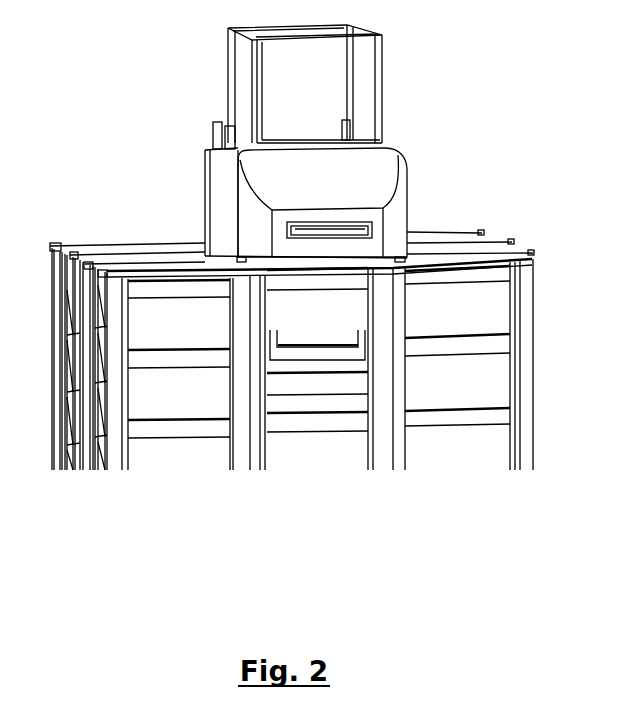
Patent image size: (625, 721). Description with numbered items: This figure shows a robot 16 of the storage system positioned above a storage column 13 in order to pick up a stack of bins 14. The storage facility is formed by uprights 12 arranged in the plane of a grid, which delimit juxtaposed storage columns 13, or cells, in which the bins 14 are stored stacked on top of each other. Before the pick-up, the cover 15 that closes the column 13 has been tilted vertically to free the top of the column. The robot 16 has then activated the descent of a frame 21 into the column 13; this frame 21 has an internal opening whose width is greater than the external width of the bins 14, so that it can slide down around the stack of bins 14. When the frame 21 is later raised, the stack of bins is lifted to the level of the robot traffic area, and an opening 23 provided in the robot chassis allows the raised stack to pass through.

The upright 12 is at (247, 462).
The storage column 13 is at (325, 452).
The bin 14 is at (290, 314).
The cover 15 is at (225, 175).
The robot 16 is at (380, 164).
The frame 21 is at (328, 367).
The opening 23 is at (303, 143).